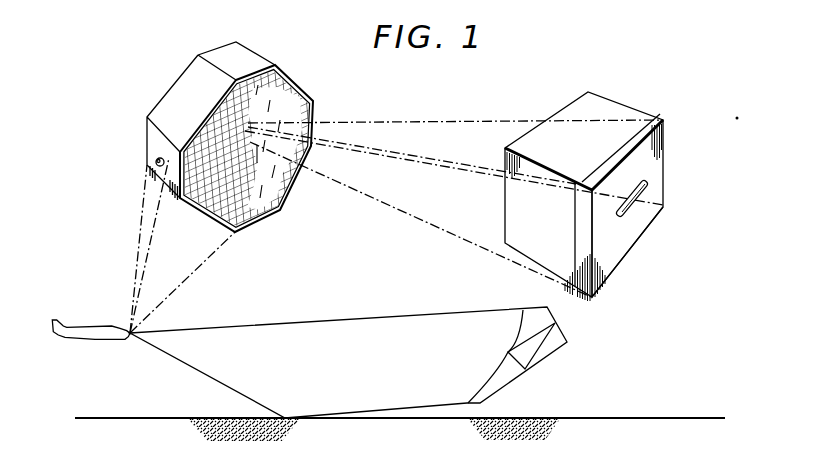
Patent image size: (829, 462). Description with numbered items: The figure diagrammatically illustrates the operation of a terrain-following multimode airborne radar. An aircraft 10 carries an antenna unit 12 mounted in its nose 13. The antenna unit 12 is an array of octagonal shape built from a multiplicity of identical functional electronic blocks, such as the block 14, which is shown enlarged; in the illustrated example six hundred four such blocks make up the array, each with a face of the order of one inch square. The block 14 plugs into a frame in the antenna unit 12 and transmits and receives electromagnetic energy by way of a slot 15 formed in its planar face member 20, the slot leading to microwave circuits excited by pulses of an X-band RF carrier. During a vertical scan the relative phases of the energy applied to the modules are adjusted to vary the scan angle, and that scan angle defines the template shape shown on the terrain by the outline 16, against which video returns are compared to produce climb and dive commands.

The aircraft 10 is at (85, 329).
The antenna unit 12 is at (172, 95).
The nose 13 is at (130, 340).
The functional electronic block 14 is at (578, 157).
The slot 15 is at (618, 219).
The outline 16 is at (508, 352).
The planar face member 20 is at (617, 260).